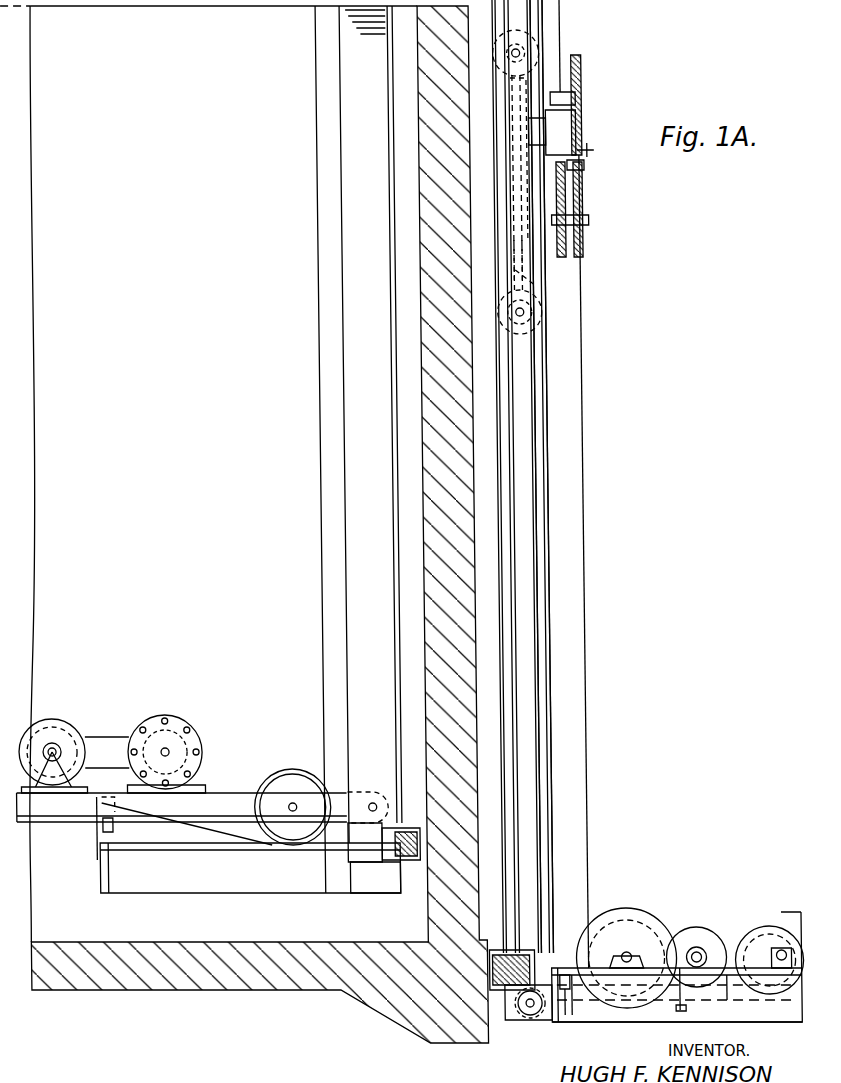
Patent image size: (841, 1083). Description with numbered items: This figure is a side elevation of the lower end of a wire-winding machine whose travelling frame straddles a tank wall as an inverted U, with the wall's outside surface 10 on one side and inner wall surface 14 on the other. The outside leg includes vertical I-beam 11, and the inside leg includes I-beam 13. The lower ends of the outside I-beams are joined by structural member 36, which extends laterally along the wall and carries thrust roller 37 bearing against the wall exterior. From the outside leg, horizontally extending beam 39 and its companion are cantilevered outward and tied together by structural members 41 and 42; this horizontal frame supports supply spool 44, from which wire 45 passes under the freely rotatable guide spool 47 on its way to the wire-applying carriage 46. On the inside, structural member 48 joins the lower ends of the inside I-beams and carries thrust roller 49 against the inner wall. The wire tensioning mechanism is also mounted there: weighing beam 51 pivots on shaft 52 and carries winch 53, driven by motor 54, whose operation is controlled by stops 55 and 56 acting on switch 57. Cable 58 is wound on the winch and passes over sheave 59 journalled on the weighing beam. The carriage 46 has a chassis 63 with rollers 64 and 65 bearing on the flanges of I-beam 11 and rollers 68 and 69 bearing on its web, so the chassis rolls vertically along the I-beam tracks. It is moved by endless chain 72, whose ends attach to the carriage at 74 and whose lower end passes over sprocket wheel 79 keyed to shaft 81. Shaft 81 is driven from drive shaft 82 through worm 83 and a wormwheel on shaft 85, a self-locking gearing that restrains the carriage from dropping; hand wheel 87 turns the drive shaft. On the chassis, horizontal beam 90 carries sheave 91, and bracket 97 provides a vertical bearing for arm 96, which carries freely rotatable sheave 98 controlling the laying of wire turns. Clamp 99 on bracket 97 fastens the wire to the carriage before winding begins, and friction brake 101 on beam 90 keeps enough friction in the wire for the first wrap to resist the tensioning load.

The outside surface of tank wall 10 is at (463, 432).
The I-beam 11 is at (541, 590).
The I-beam 13 is at (342, 440).
The inner wall surface 14 is at (414, 366).
The structural member 36 is at (537, 955).
The thrust roller 37 is at (514, 958).
The horizontally extending beam 39 is at (653, 1005).
The structural member 41 is at (578, 1022).
The structural member 42 is at (668, 1015).
The supply spool 44 is at (772, 928).
The wire 45 is at (577, 815).
The wire-applying carriage 46 is at (590, 232).
The freely rotatable spool 47 is at (629, 910).
The structural member 48 is at (362, 848).
The thrust roller 49 is at (405, 825).
The weighing beam 51 is at (229, 790).
The shaft 52 is at (363, 795).
The winch 53 is at (53, 722).
The motor 54 is at (161, 714).
The stop 55 is at (95, 805).
The stop 56 is at (87, 834).
The switch 57 is at (102, 827).
The cable 58 is at (310, 693).
The sheave 59 is at (283, 768).
The chassis 63 is at (509, 195).
The roller 64 is at (536, 318).
The roller 65 is at (529, 40).
The roller 68 is at (531, 275).
The roller 69 is at (509, 118).
The endless chain 72 is at (531, 522).
The chain attachment point 74 is at (488, 1020).
The sprocket wheel 79 is at (521, 1012).
The shaft 81 is at (543, 1015).
The drive shaft 82 is at (686, 950).
The worm 83 is at (715, 1000).
The shaft 85 is at (607, 954).
The hand wheel 87 is at (707, 940).
The horizontal beam 90 is at (547, 135).
The sheave 91 is at (581, 76).
The arm 96 is at (576, 170).
The bracket 97 is at (574, 140).
The sheave 98 is at (580, 195).
The clamp 99 is at (564, 103).
The friction brake 101 is at (594, 150).